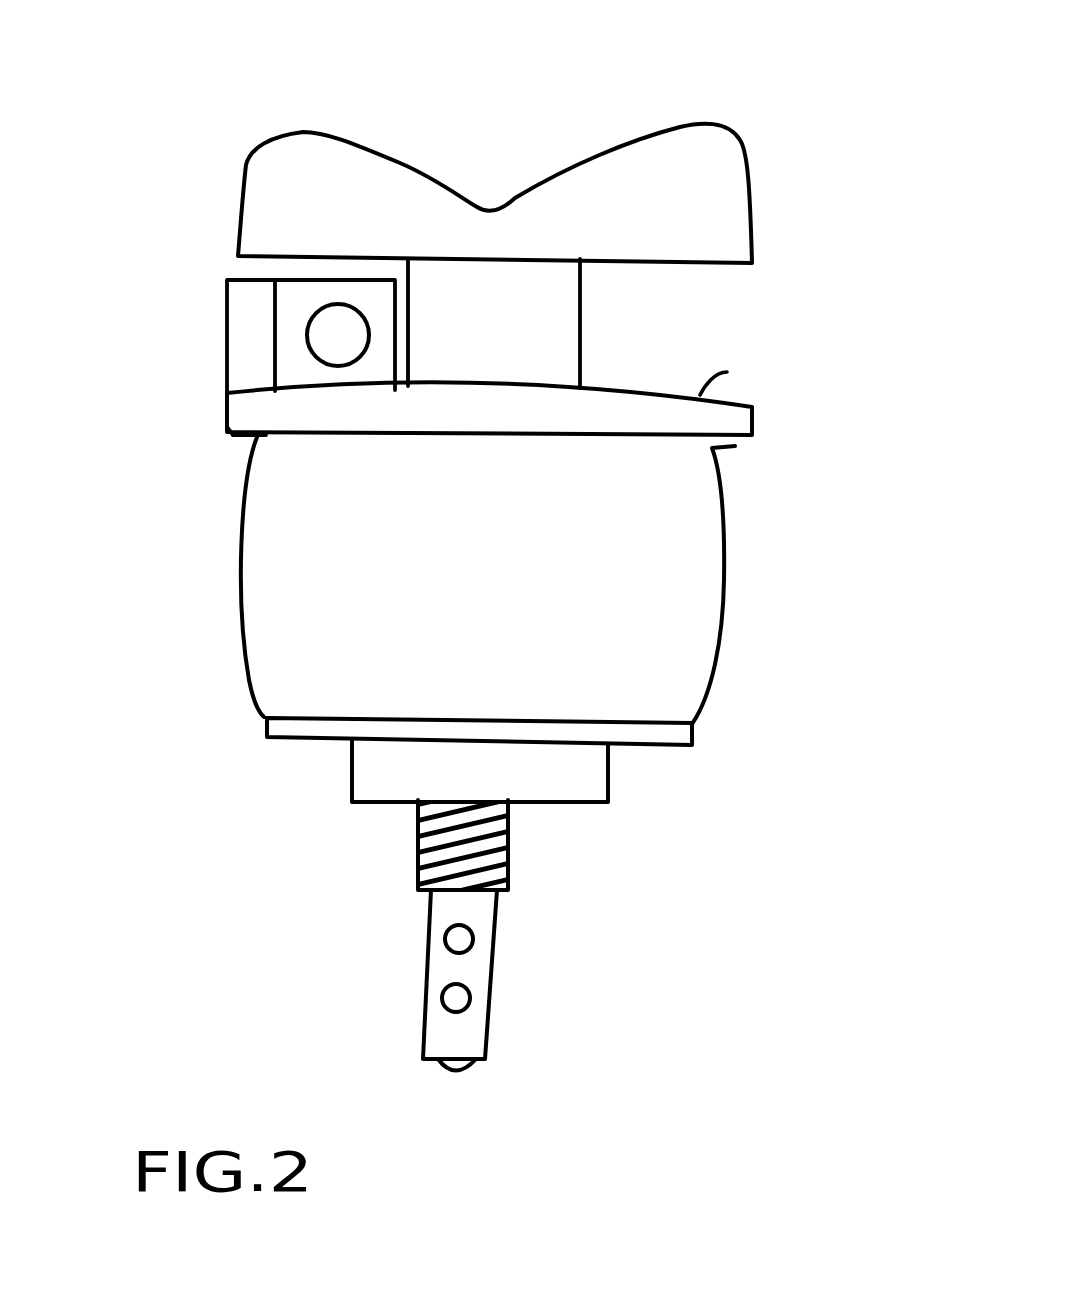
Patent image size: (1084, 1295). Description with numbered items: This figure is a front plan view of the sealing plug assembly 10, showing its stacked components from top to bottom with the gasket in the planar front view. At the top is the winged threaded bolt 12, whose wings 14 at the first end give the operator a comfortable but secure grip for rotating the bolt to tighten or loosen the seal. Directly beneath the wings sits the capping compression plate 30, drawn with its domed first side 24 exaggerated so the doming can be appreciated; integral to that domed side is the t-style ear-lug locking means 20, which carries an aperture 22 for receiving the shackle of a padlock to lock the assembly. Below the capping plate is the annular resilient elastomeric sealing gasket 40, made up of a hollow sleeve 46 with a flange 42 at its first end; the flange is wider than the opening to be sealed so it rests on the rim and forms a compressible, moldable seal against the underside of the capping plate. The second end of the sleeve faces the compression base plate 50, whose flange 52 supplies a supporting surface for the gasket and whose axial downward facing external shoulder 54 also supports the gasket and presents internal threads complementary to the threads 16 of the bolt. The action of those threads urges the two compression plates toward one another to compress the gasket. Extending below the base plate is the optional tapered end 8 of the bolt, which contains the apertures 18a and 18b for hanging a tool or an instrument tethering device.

The sealing plug assembly 10 is at (895, 45).
The wings 14 is at (752, 200).
The winged threaded bolt 12 is at (580, 327).
The locking means 20 is at (226, 316).
The aperture 22 is at (308, 355).
The domed first side 24 is at (727, 372).
The capping compression plate 30 is at (752, 417).
The annular resilient elastomeric sealing gasket 40 is at (727, 531).
The flange 42 is at (242, 438).
The hollow sleeve 46 is at (245, 660).
The flange 52 is at (692, 733).
The compression base plate 50 is at (608, 787).
The axial downward facing external shoulder 54 is at (352, 783).
The threads 16 is at (508, 858).
The pin 8 is at (430, 915).
The aperture 18a is at (474, 945).
The aperture 18b is at (471, 1002).